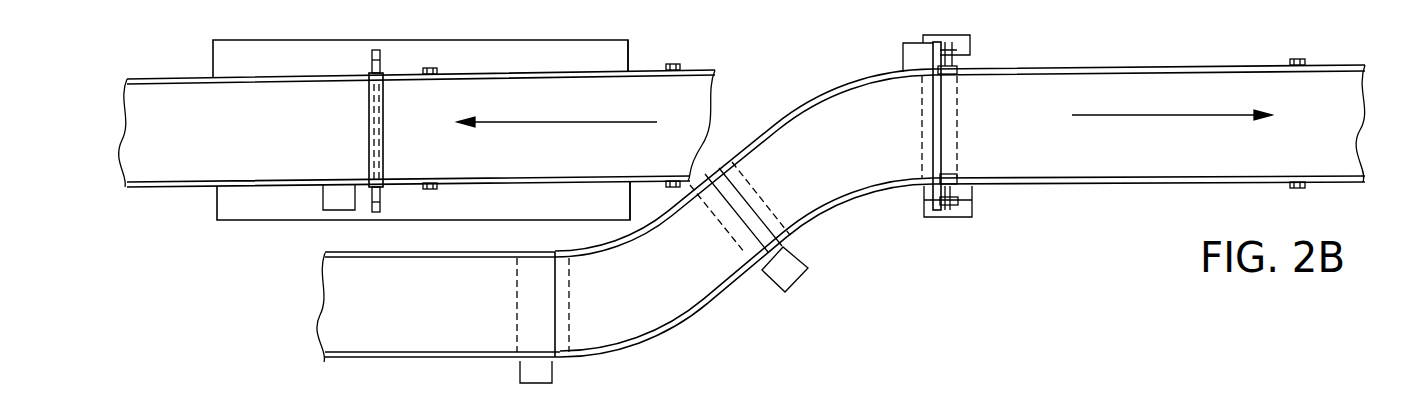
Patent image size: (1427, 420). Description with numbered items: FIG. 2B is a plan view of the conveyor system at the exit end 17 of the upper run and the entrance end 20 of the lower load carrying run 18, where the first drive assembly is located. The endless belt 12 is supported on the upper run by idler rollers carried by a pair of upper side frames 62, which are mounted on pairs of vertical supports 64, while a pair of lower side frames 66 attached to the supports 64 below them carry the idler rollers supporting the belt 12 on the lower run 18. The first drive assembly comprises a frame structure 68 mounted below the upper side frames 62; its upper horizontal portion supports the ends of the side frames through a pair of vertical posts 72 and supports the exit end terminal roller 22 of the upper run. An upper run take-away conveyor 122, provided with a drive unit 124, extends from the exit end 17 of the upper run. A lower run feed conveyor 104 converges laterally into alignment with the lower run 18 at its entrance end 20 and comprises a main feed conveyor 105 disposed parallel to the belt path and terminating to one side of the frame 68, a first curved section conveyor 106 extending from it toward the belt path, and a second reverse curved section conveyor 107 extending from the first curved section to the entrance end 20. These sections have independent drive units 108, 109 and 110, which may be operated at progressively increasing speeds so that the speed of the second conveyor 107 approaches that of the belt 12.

The endless belt 12 is at (569, 163).
The exit end of the upper run 17 is at (368, 123).
The lower load carrying run 18 is at (1097, 80).
The entrance end of the lower run 20 is at (933, 108).
The exit end terminal roller 22 is at (386, 122).
The upper side frames 62 is at (560, 70).
The vertical supports 64 is at (681, 64).
The lower side frames 66 is at (1170, 66).
The frame structure 68 is at (268, 40).
The vertical posts 72 is at (439, 69).
The lower run feed conveyor 104 is at (751, 301).
The main feed conveyor 105 is at (455, 252).
The first curved section conveyor 106 is at (709, 313).
The second reverse curved section conveyor 107 is at (851, 200).
The drive unit 108 is at (553, 372).
The drive unit 109 is at (806, 272).
The drive unit 110 is at (903, 50).
The upper run take-away conveyor 122 is at (190, 78).
The drive unit 124 is at (320, 190).